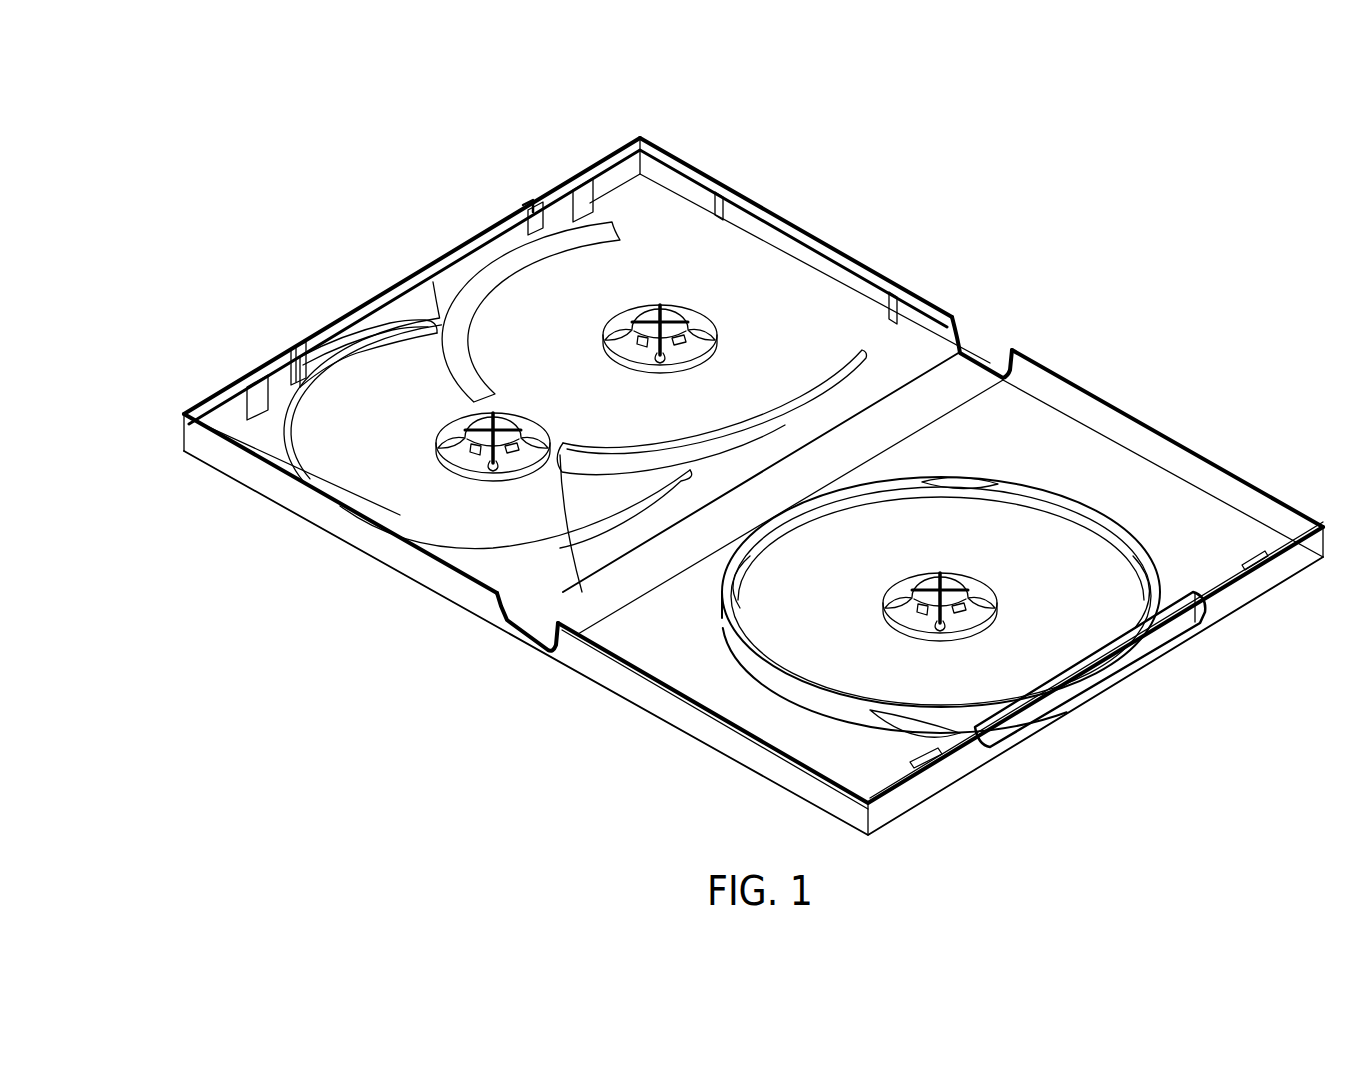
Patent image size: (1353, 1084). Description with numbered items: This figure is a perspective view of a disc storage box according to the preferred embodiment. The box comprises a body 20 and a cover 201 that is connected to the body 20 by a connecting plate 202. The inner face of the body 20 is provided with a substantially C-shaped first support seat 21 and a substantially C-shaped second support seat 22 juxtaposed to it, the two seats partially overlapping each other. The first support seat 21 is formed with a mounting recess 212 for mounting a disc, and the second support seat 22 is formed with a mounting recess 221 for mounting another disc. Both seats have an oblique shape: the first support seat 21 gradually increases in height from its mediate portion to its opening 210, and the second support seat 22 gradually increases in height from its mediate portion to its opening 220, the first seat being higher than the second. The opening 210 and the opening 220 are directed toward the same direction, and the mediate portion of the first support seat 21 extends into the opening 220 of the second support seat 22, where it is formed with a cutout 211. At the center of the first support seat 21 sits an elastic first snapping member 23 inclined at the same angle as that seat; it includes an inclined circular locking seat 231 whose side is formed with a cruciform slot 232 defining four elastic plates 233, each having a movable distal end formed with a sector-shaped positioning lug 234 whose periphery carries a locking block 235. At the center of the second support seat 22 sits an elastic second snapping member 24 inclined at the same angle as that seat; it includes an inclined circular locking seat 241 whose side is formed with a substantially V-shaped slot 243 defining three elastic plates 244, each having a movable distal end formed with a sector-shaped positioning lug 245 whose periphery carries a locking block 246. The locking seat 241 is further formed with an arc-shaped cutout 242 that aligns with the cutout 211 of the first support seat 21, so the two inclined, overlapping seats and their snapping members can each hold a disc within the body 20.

The body 20 is at (176, 431).
The first support seat 21 is at (512, 256).
The cover 201 is at (1040, 363).
The connecting plate 202 is at (988, 355).
The opening 210 is at (640, 305).
The cutout 211 is at (500, 335).
The mounting recess 212 is at (562, 232).
The second support seat 22 is at (381, 343).
The opening 220 is at (397, 323).
The mounting recess 221 is at (373, 330).
The first snapping member 23 is at (716, 281).
The locking seat 231 is at (720, 355).
The cruciform slot 232 is at (663, 303).
The elastic plates 233 is at (703, 320).
The positioning lug 234 is at (655, 300).
The locking block 235 is at (676, 300).
The second snapping member 24 is at (360, 418).
The locking seat 241 is at (471, 482).
The arc-shaped cutout 242 is at (503, 398).
The V-shaped slot 243 is at (463, 453).
The elastic plates 244 is at (442, 483).
The positioning lug 245 is at (478, 410).
The locking block 246 is at (496, 476).